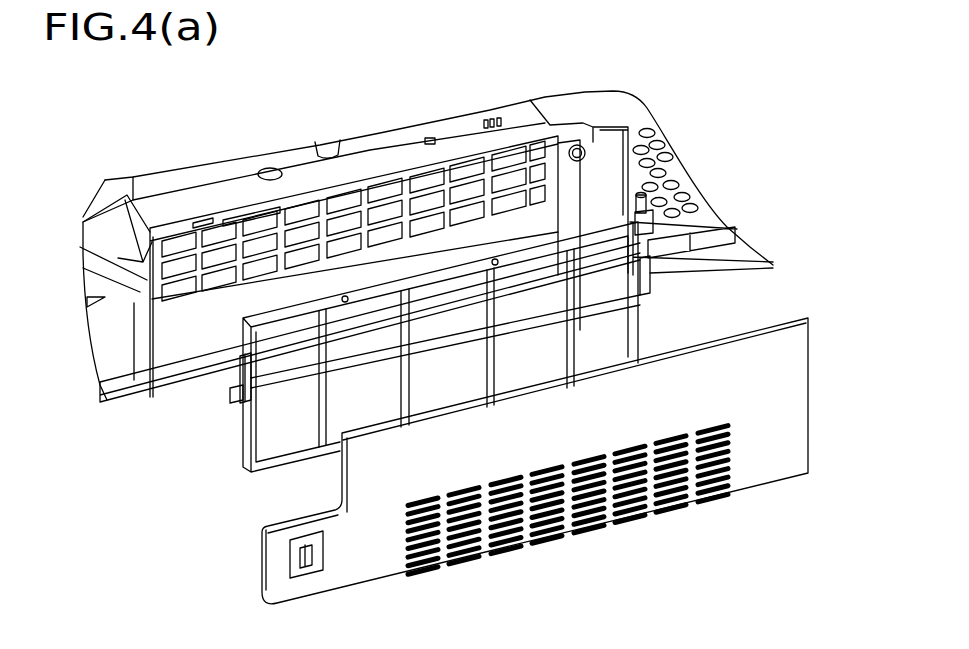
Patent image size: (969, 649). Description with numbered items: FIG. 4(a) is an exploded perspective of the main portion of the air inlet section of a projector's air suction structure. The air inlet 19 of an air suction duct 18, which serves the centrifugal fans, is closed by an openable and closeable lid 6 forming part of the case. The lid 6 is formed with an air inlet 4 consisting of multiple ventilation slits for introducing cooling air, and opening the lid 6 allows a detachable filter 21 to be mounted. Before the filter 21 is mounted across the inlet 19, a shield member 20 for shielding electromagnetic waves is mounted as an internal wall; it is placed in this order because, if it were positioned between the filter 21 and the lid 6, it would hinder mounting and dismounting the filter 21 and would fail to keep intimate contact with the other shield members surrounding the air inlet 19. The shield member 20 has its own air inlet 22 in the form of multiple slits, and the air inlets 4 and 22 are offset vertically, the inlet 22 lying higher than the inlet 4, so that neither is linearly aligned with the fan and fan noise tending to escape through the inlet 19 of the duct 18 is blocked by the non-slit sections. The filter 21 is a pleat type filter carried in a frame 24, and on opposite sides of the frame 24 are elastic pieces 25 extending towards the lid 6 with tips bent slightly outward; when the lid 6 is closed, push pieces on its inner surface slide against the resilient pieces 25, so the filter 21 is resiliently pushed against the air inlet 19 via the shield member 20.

The air inlet 4 is at (627, 517).
The lid 6 is at (797, 415).
The air suction duct 18 is at (517, 113).
The air inlet 19 is at (622, 115).
The shield member 20 is at (187, 343).
The filter 21 is at (238, 468).
The air inlet 22 is at (172, 298).
The frame 24 is at (240, 420).
The elastic pieces 25 is at (233, 395).